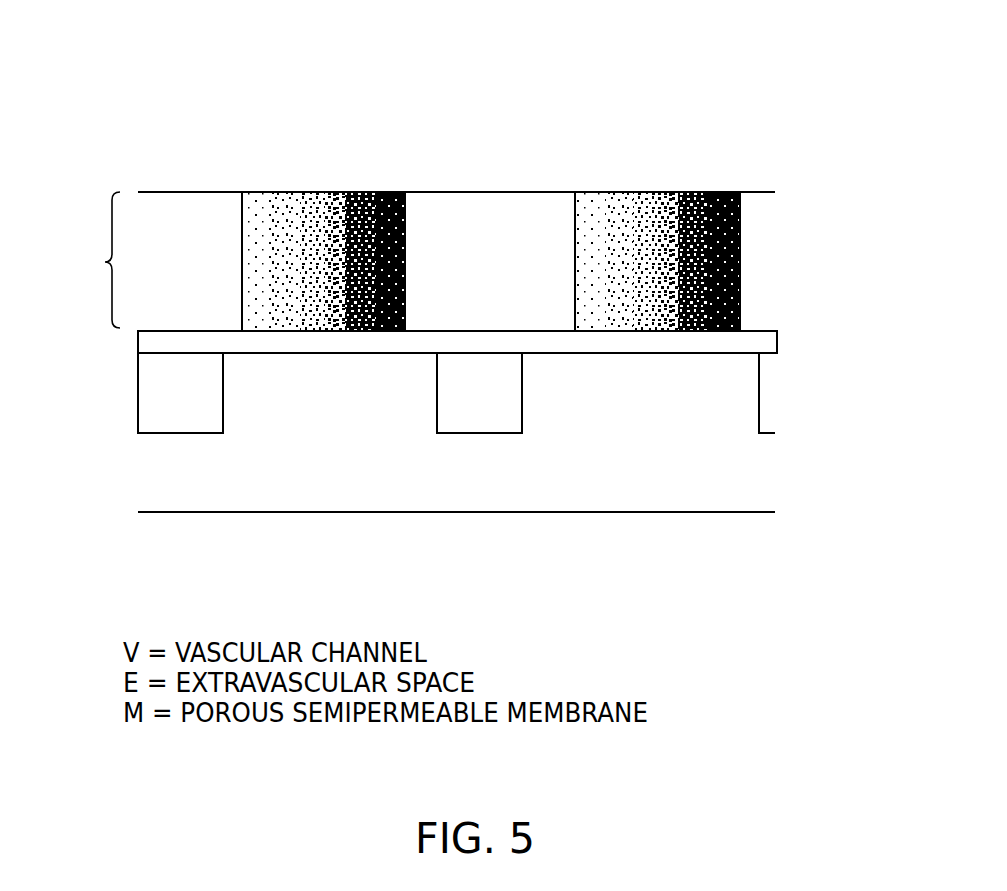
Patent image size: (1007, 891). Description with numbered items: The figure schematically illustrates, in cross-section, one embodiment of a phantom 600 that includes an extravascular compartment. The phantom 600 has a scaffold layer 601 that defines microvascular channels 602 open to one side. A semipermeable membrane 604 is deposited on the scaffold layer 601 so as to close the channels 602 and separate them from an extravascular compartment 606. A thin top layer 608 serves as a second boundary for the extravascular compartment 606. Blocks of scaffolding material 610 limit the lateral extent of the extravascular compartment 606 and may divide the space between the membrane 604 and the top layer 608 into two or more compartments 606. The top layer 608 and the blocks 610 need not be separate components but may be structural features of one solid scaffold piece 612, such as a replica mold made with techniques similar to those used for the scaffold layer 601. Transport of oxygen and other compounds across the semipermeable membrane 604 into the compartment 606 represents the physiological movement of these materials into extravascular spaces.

The phantom 600 is at (706, 63).
The scaffold layer 601 is at (760, 384).
The microvascular channels 602 is at (153, 382).
The semipermeable membrane 604 is at (765, 345).
The extravascular compartment 606 is at (480, 210).
The top layer 608 is at (530, 190).
The blocks of scaffolding material 610 is at (302, 207).
The solid scaffold piece 612 is at (87, 260).